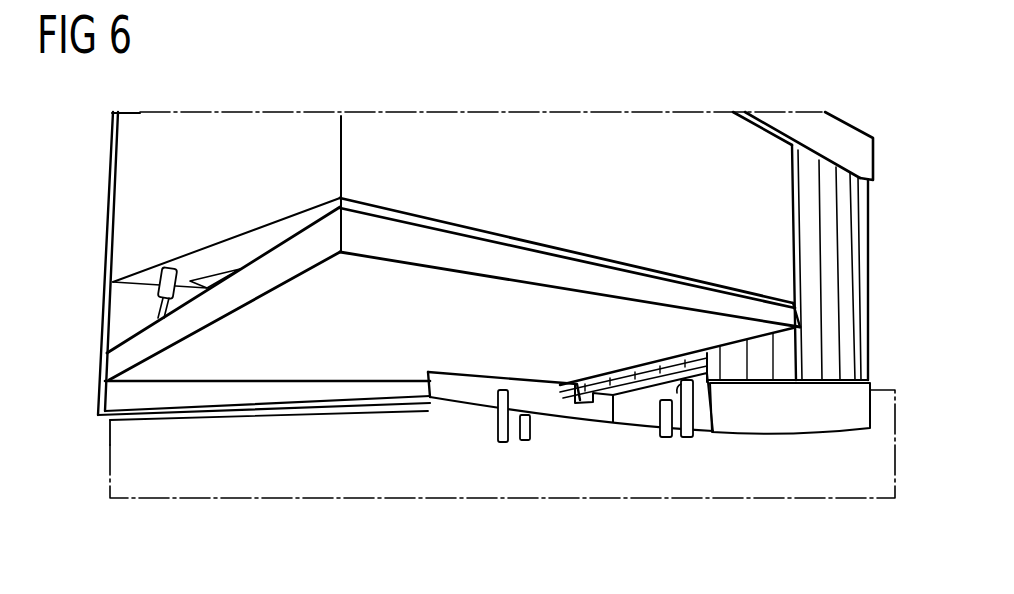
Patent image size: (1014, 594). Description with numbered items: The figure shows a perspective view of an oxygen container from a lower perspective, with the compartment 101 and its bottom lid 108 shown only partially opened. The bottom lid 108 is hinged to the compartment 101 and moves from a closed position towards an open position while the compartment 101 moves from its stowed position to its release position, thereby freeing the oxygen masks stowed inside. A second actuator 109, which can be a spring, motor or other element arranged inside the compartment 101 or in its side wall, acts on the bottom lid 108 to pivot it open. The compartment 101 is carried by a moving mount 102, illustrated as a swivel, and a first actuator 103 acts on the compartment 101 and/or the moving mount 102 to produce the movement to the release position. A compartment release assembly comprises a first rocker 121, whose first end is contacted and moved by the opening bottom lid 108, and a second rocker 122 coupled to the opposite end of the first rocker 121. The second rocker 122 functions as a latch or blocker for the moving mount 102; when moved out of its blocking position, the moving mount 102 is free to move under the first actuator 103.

The compartment 101 is at (460, 127).
The moving mount 102 is at (807, 237).
The first actuator 103 is at (853, 407).
The bottom lid 108 is at (277, 265).
The second actuator 109 is at (158, 281).
The first rocker 121 is at (540, 395).
The second rocker 122 is at (648, 388).